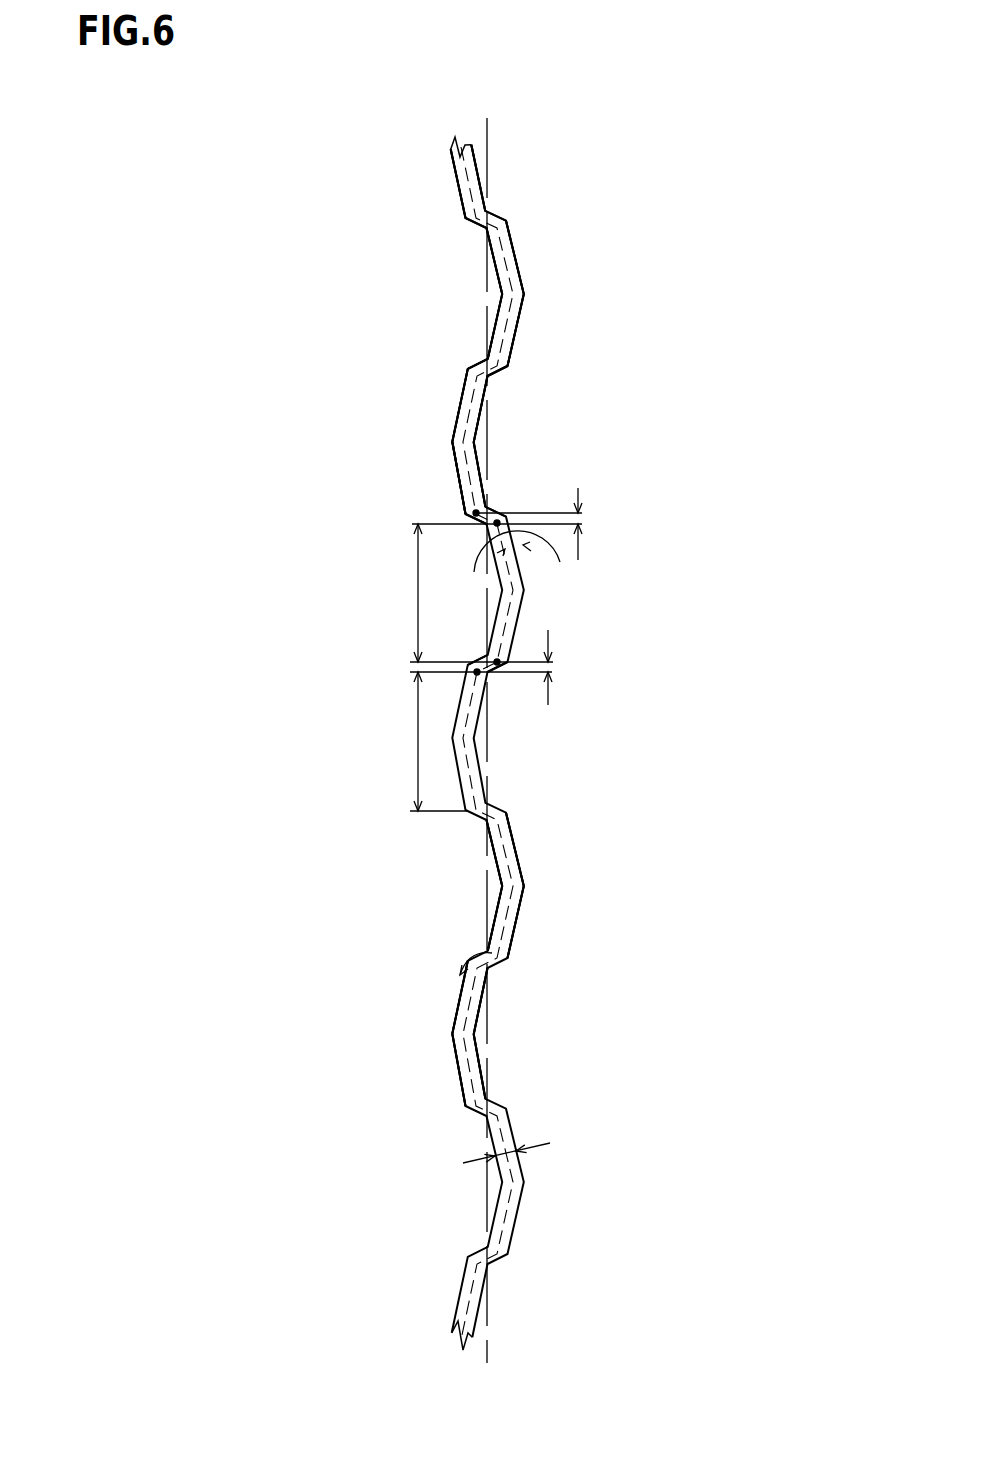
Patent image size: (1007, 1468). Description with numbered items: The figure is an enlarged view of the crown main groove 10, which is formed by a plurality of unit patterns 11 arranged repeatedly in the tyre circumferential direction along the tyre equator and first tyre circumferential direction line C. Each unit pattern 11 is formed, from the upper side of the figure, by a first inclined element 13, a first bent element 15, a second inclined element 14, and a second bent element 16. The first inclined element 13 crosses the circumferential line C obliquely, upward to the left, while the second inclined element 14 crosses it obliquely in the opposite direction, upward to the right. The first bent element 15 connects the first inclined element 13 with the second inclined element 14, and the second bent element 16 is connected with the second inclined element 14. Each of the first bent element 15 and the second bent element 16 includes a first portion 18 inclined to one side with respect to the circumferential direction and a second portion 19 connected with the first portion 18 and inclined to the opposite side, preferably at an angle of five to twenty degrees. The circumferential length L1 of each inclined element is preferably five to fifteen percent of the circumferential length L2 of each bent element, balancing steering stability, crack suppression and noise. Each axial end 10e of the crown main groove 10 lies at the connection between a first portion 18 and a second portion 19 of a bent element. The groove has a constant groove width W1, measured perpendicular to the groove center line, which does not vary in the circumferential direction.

The crown main groove 10 is at (469, 1289).
The end of the crown main groove 10e is at (458, 445).
The unit pattern 11 is at (608, 193).
The first inclined element 13 is at (498, 222).
The second inclined element 14 is at (498, 373).
The first bent element 15 is at (512, 262).
The second bent element 16 is at (492, 448).
The first portion 18 is at (516, 912).
The second portion 19 is at (511, 858).
The tyre equator / first tyre circumferential direction line C is at (491, 723).
The length of inclined element L1 is at (515, 596).
The length of bent element L2 is at (421, 667).
The groove width W1 is at (508, 1155).